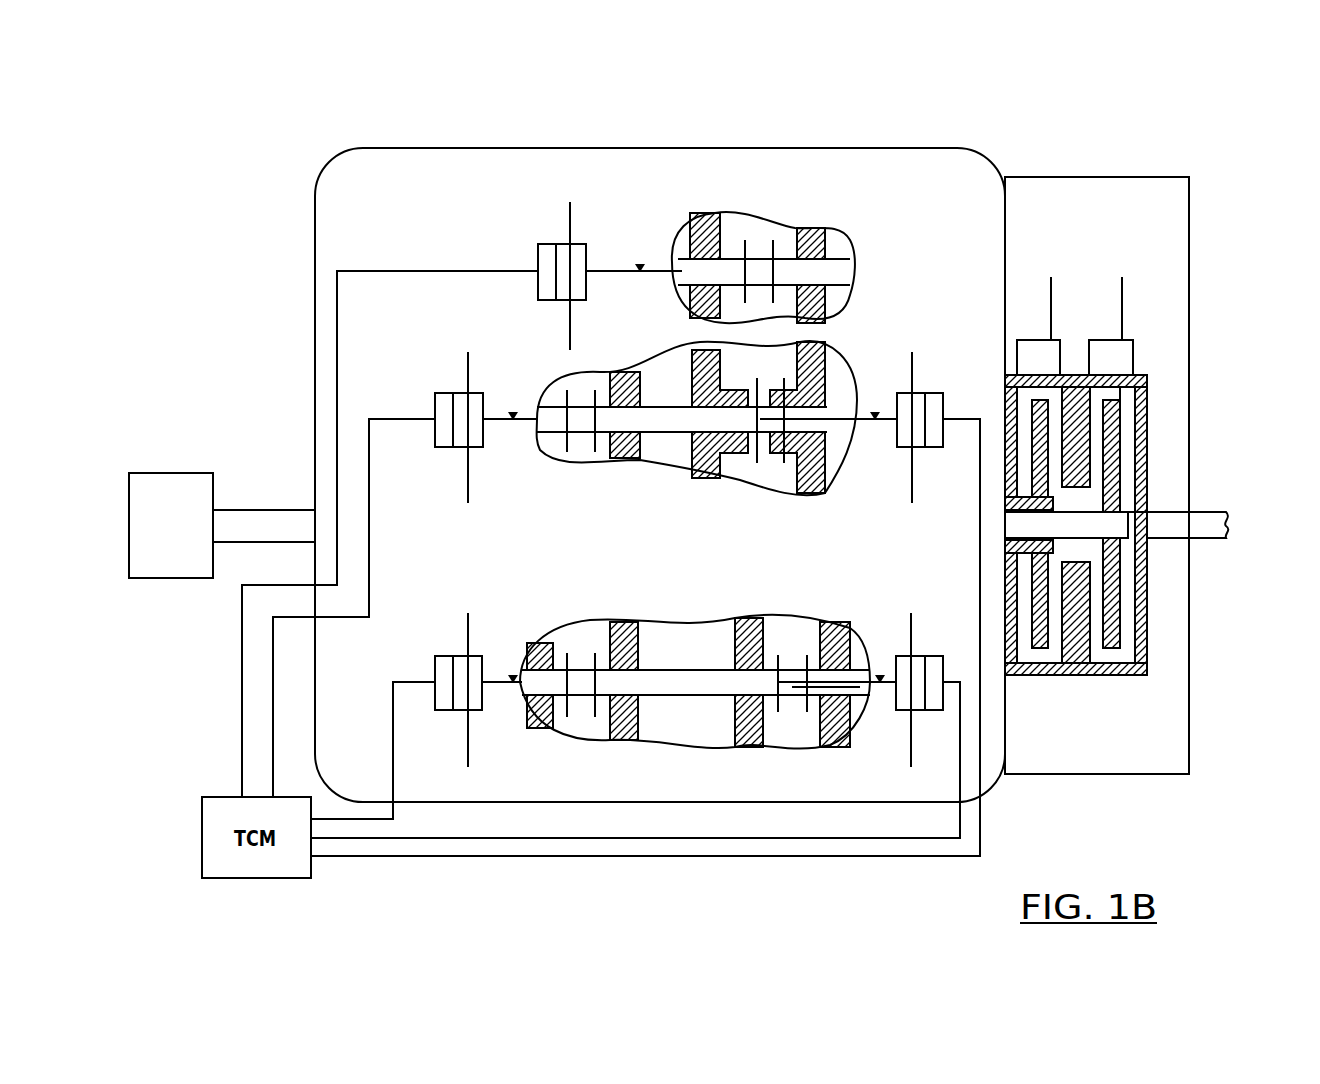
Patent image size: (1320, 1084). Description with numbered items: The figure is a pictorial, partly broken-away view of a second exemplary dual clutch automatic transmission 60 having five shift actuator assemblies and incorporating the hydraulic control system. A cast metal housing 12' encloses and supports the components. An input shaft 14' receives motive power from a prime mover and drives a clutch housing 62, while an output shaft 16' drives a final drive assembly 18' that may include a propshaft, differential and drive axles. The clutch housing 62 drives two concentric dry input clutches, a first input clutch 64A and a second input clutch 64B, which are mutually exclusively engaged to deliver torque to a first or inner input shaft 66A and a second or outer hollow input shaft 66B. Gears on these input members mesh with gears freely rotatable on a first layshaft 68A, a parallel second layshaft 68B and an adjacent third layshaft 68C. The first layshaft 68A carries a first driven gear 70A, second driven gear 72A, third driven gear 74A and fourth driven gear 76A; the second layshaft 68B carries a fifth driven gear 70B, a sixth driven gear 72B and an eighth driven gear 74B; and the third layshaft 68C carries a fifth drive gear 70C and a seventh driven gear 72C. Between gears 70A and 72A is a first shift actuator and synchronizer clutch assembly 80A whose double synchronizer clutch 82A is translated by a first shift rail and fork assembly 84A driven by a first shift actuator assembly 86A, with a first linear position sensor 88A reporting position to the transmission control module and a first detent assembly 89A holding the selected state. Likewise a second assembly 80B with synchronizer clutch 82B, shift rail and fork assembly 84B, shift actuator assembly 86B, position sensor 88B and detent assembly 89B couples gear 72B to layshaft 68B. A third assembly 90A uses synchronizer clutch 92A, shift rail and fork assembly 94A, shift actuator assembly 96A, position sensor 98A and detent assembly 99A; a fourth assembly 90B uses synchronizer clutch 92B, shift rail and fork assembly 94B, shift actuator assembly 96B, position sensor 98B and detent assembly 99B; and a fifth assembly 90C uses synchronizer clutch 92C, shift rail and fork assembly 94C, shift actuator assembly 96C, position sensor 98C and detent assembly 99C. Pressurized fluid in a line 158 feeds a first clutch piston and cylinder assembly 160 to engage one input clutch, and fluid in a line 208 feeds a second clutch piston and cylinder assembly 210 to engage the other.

The housing 12' is at (645, 464).
The input shaft 14' is at (1188, 503).
The output shaft 16' is at (264, 500).
The final drive assembly 18' is at (171, 499).
The dual clutch transmission 60 is at (1220, 178).
The clutch housing 62 is at (1150, 425).
The first input clutch 64A is at (1113, 468).
The second input clutch 64B is at (1058, 665).
The first input shaft 66A is at (1120, 527).
The second input shaft 66B is at (1034, 660).
The first layshaft 68A is at (664, 683).
The second layshaft 68B is at (663, 428).
The third layshaft 68C is at (840, 272).
The first driven gear 70A is at (843, 732).
The fifth driven gear 70B is at (812, 483).
The fifth drive gear 70C is at (817, 233).
The second driven gear 72A is at (750, 742).
The sixth driven gear 72B is at (707, 473).
The seventh driven gear 72C is at (700, 235).
The third driven gear 74A is at (625, 740).
The eighth driven gear 74B is at (623, 455).
The fourth driven gear 76A is at (548, 732).
The first shift actuator and synchronizer clutch assembly 80A is at (850, 586).
The second shift actuator and synchronizer clutch assembly 80B is at (850, 340).
The first synchronizer clutch 82A is at (792, 688).
The second synchronizer clutch 82B is at (775, 432).
The first shift rail and fork assembly 84A is at (818, 680).
The second shift rail and fork assembly 84B is at (885, 426).
The first shift actuator assembly 86A is at (915, 670).
The second shift actuator assembly 86B is at (917, 408).
The first linear position sensor 88A is at (920, 705).
The second linear position sensor 88B is at (933, 442).
The first detent assembly 89A is at (880, 674).
The second detent assembly 89B is at (875, 411).
The third shift actuator and synchronizer clutch assembly 90A is at (490, 578).
The fourth shift actuator and synchronizer clutch assembly 90B is at (490, 318).
The fifth shift actuator and synchronizer clutch assembly 90C is at (982, 145).
The third synchronizer clutch 92A is at (574, 683).
The fourth synchronizer clutch 92B is at (578, 420).
The fifth synchronizer clutch 92C is at (760, 270).
The third shift rail and fork assembly 94A is at (487, 690).
The fourth shift rail and fork assembly 94B is at (491, 424).
The fifth shift rail and fork assembly 94C is at (608, 273).
The third shift actuator assembly 96A is at (462, 707).
The fourth shift actuator assembly 96B is at (460, 440).
The fifth shift actuator assembly 96C is at (580, 252).
The third linear position sensor 98A is at (438, 670).
The fourth linear position sensor 98B is at (440, 408).
The fifth linear position sensor 98C is at (547, 252).
The third detent assembly 99A is at (513, 674).
The fourth detent assembly 99B is at (513, 411).
The fifth detent assembly 99C is at (640, 264).
The line 158 is at (1125, 307).
The first clutch piston and cylinder assembly 160 is at (1123, 357).
The line 208 is at (1052, 307).
The second clutch piston and cylinder assembly 210 is at (1035, 350).